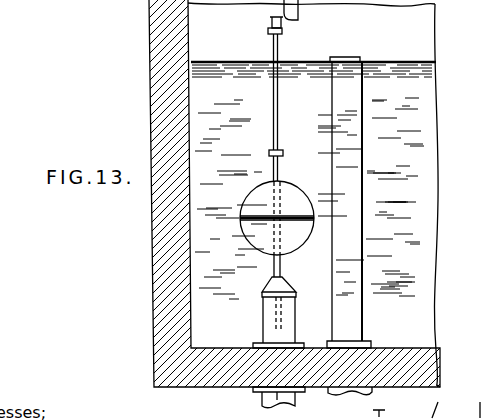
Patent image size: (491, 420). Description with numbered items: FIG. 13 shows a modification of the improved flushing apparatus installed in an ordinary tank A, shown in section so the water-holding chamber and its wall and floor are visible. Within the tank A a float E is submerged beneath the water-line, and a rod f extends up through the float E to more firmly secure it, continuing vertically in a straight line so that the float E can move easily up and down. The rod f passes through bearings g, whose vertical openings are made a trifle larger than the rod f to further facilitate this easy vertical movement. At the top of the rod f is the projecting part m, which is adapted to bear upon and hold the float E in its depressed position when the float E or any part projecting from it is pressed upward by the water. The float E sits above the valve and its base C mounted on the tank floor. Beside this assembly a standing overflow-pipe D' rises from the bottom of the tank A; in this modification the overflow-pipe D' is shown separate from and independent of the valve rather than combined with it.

The tank A is at (245, 200).
The projecting part m is at (298, 18).
The rod f is at (283, 107).
The bearing g is at (269, 157).
The float E is at (277, 218).
The base cone C is at (279, 331).
The overflow-pipe D' is at (349, 226).